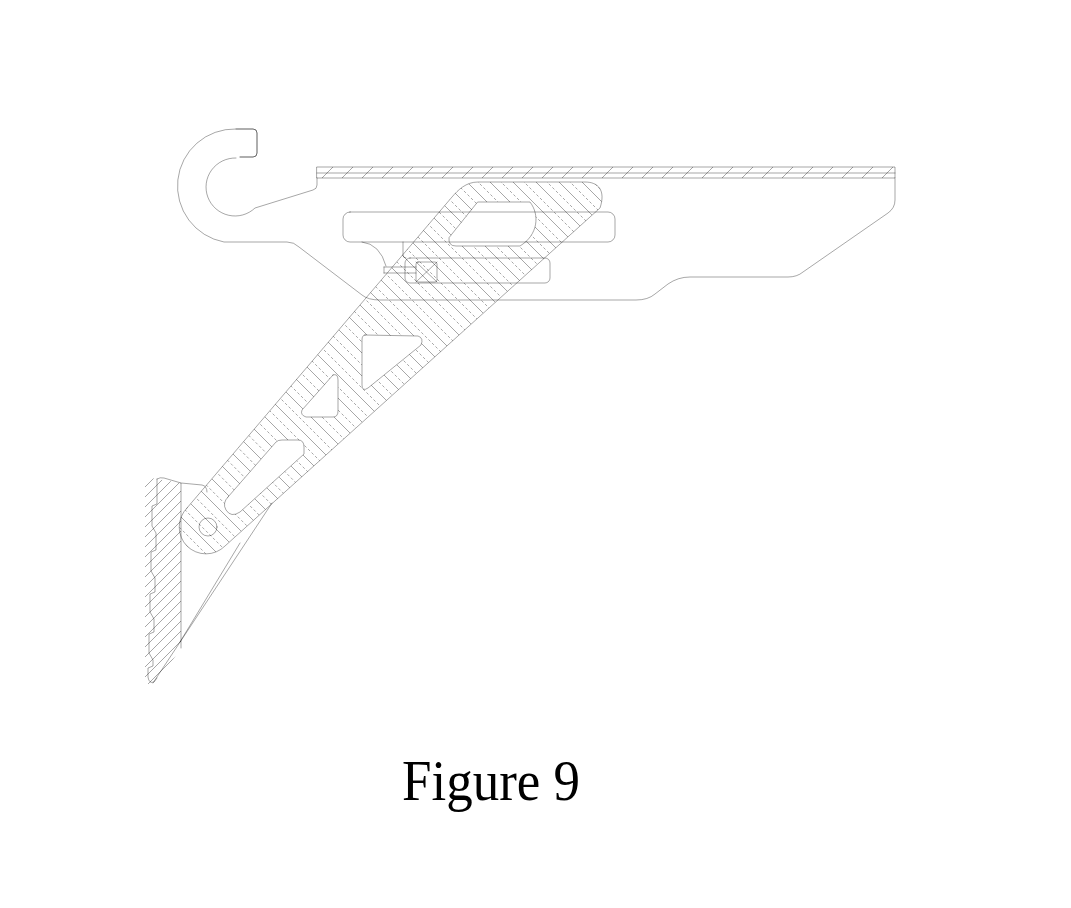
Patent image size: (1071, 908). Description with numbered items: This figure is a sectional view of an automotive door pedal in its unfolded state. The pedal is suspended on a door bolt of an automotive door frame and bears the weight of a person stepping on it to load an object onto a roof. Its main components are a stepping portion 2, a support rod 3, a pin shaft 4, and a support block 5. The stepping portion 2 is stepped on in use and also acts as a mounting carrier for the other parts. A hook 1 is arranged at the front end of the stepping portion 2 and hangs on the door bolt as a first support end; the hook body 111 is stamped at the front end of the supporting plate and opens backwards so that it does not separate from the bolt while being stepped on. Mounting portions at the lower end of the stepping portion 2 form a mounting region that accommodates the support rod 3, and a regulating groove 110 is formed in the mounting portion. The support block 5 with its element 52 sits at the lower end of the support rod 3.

The hook 1 is at (536, 198).
The stepping portion 2 is at (653, 170).
The support rod 3 is at (323, 433).
The pin shaft 4 is at (432, 278).
The support block 5 is at (196, 545).
The serrated sole 52 is at (172, 530).
The regulating groove 110 is at (393, 230).
The hook body 111 is at (228, 145).